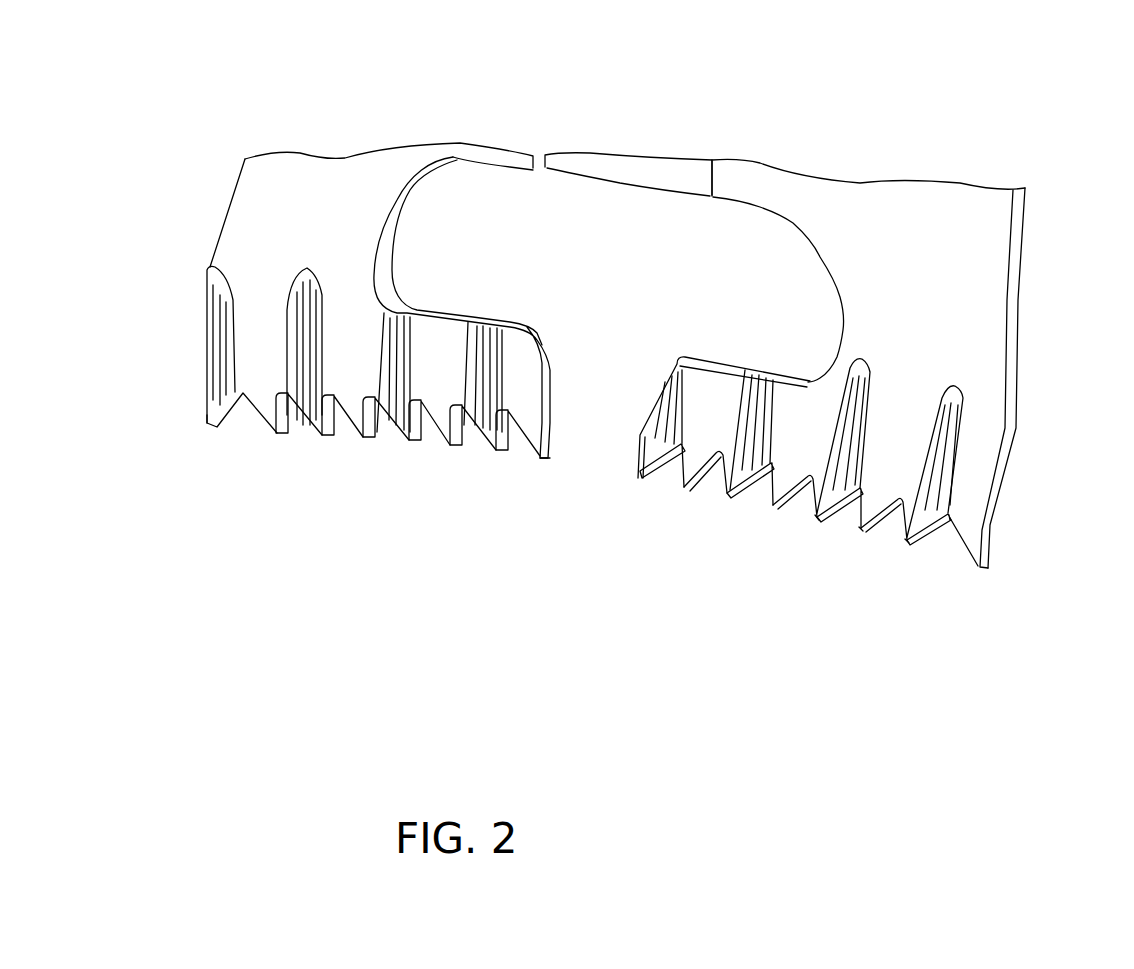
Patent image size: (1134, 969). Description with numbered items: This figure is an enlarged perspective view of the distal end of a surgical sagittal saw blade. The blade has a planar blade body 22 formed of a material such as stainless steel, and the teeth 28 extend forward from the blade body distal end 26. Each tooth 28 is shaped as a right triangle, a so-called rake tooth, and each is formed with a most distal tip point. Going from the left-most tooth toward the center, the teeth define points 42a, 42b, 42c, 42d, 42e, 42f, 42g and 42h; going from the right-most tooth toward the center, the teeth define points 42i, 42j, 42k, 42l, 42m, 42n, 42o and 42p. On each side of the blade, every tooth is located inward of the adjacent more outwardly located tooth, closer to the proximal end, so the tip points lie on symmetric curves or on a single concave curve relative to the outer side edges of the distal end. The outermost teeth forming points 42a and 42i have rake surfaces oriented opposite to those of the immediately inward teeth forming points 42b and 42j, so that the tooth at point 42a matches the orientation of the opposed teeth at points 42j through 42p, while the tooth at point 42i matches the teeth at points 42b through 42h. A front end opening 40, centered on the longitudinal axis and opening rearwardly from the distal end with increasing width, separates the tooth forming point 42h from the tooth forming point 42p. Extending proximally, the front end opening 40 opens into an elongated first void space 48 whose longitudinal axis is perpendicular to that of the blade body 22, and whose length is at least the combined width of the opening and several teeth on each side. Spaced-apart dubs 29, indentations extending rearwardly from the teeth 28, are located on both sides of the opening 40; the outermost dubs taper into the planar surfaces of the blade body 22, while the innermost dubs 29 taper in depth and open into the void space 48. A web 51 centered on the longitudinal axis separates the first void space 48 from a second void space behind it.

The blade body 22 is at (235, 85).
The distal end 26 is at (1022, 258).
The teeth 28 is at (318, 405).
The dubs 29 is at (397, 320).
The front end opening 40 is at (592, 448).
The tooth point 42a is at (205, 428).
The tooth point 42b is at (280, 440).
The tooth point 42c is at (323, 445).
The tooth point 42d is at (365, 447).
The tooth point 42e is at (413, 450).
The tooth point 42f is at (457, 455).
The tooth point 42g is at (508, 462).
The tooth point 42h is at (542, 467).
The tooth point 42i is at (982, 573).
The tooth point 42j is at (905, 542).
The tooth point 42k is at (861, 530).
The tooth point 42l is at (817, 518).
The tooth point 42m is at (773, 508).
The tooth point 42n is at (732, 500).
The tooth point 42o is at (683, 490).
The tooth point 42p is at (638, 490).
The first void space 48 is at (813, 297).
The web 51 is at (647, 177).